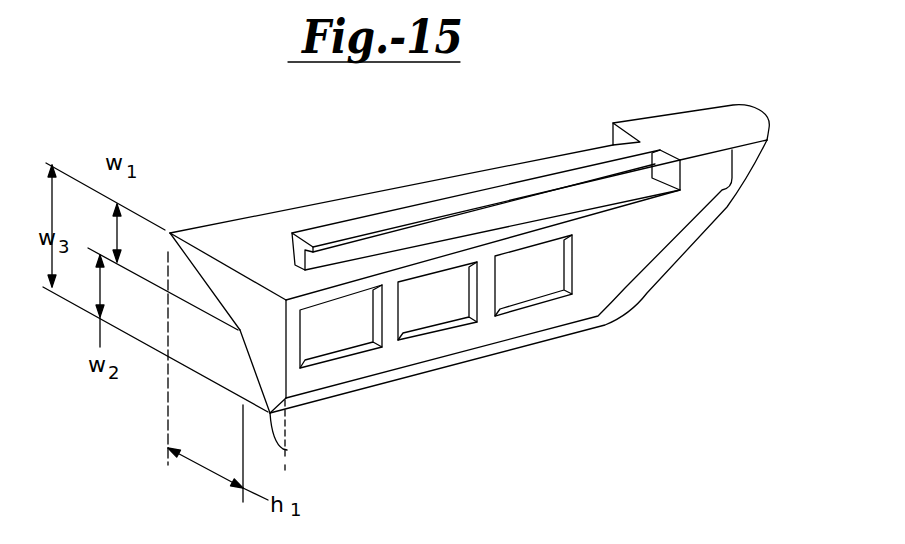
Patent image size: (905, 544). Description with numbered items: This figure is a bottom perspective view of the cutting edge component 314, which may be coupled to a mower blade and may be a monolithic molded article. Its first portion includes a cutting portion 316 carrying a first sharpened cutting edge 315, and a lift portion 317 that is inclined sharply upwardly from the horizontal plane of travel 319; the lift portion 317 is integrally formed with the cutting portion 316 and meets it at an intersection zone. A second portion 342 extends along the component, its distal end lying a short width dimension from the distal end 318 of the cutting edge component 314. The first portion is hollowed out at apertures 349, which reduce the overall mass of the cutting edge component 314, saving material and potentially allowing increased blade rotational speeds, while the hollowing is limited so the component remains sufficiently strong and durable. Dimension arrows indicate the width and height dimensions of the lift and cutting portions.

The cutting edge component 314 is at (505, 145).
The lift portion 317 is at (250, 272).
The distal end 318 is at (218, 262).
The cutting portion 316 is at (255, 370).
The first sharpened cutting edge 315 is at (287, 450).
The horizontal plane of travel 319 is at (285, 465).
The second portion 342 is at (311, 222).
The apertures 349 is at (335, 337).